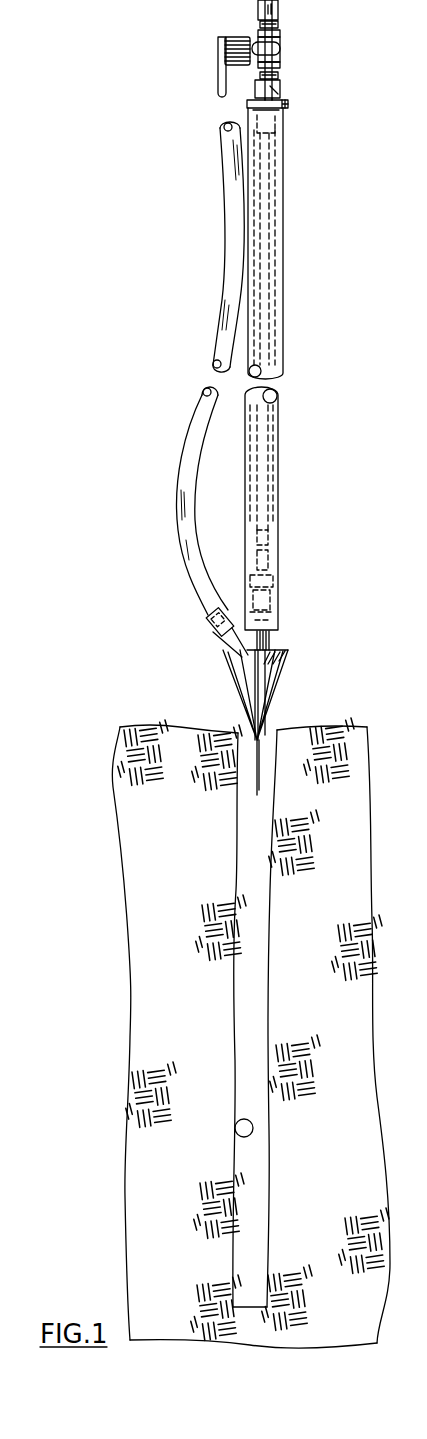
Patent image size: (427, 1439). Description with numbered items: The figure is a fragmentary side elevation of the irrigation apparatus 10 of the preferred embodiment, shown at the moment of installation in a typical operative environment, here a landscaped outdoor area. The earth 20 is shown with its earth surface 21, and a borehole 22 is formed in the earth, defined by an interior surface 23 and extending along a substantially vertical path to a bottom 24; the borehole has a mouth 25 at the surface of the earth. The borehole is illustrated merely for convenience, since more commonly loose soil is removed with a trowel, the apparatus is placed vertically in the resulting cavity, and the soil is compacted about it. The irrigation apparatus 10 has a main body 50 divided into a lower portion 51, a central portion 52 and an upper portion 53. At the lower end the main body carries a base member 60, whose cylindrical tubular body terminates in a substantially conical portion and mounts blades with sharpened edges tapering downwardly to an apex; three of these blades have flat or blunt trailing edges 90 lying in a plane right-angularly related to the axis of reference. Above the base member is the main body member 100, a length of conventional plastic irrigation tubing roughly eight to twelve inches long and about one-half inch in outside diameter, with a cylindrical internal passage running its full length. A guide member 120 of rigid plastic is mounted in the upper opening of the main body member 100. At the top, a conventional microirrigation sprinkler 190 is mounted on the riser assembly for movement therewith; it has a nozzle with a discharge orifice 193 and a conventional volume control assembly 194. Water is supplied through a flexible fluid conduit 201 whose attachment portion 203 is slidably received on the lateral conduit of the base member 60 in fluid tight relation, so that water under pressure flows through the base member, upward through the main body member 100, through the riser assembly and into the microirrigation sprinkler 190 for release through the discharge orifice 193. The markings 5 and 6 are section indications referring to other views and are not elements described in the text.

The inner tube / needle passage 5 is at (280, 83).
The needle / slit width 6 is at (272, 480).
The irrigation apparatus 10 is at (257, 432).
The earth 20 is at (225, 1012).
The earth surface 21 is at (307, 725).
The borehole 22 is at (255, 998).
The interior surface 23 is at (236, 1122).
The bottom 24 is at (260, 1310).
The mouth 25 is at (270, 733).
The main body 50 is at (280, 402).
The lower portion 51 is at (278, 603).
The central portion 52 is at (282, 352).
The upper portion 53 is at (285, 127).
The base member 60 is at (220, 695).
The trailing edges 90 is at (282, 653).
The main body member 100 is at (283, 257).
The guide member 120 is at (288, 105).
The microirrigation sprinkler 190 is at (291, 40).
The discharge orifice 193 is at (312, 0).
The volume control assembly 194 is at (218, 47).
The flexible fluid conduit 201 is at (202, 402).
The attachment portion 203 is at (207, 622).